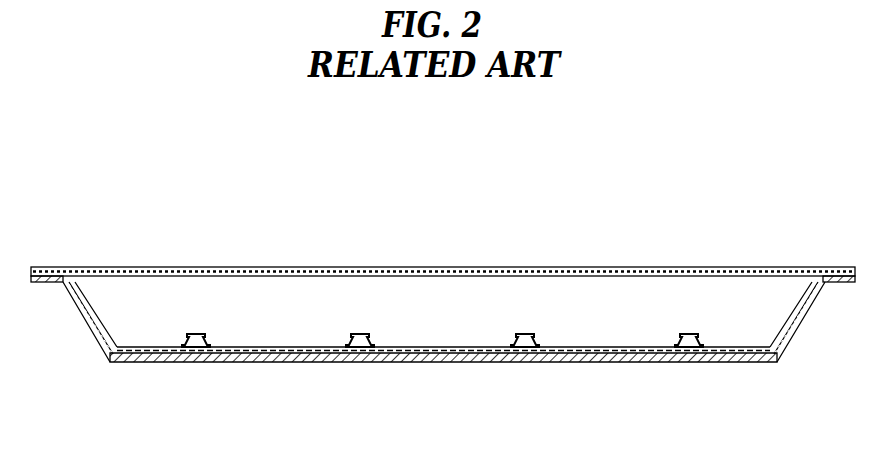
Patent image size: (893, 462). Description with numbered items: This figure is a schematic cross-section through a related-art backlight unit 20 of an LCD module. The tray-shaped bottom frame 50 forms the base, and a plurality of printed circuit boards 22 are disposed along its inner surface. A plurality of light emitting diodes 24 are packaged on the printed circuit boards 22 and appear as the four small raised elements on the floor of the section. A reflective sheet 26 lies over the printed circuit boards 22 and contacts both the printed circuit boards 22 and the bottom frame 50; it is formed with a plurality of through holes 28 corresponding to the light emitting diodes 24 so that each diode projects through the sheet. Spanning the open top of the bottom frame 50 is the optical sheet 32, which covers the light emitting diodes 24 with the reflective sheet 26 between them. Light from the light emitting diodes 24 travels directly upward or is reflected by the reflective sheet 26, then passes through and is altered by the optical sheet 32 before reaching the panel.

The backlight unit 20 is at (528, 203).
The printed circuit board 22 is at (412, 329).
The light emitting diode 24 is at (196, 333).
The reflective sheet 26 is at (312, 362).
The through hole 28 is at (377, 346).
The optical sheet 32 is at (756, 267).
The bottom frame 50 is at (487, 362).